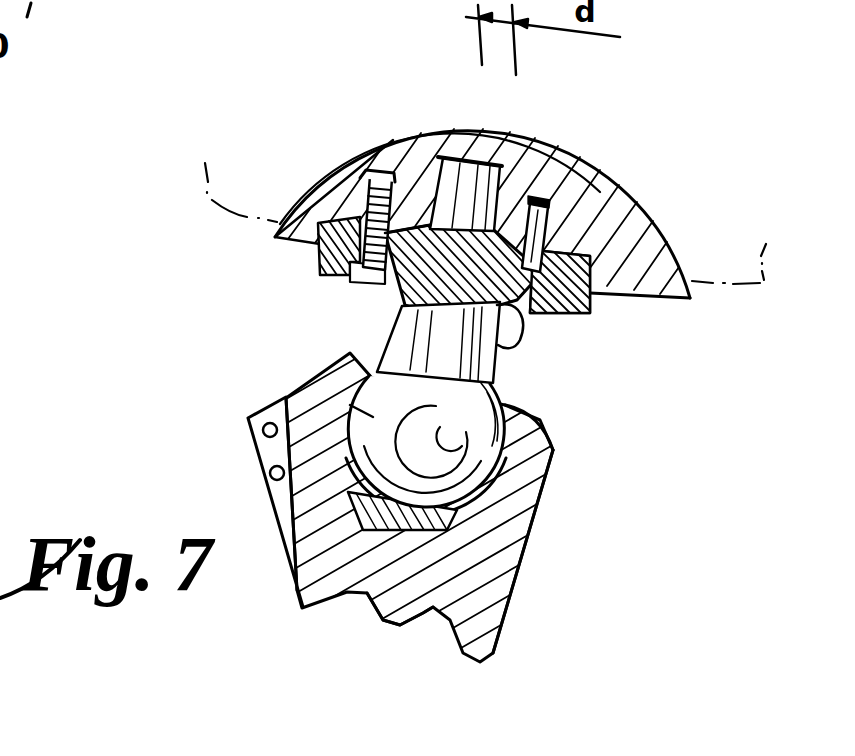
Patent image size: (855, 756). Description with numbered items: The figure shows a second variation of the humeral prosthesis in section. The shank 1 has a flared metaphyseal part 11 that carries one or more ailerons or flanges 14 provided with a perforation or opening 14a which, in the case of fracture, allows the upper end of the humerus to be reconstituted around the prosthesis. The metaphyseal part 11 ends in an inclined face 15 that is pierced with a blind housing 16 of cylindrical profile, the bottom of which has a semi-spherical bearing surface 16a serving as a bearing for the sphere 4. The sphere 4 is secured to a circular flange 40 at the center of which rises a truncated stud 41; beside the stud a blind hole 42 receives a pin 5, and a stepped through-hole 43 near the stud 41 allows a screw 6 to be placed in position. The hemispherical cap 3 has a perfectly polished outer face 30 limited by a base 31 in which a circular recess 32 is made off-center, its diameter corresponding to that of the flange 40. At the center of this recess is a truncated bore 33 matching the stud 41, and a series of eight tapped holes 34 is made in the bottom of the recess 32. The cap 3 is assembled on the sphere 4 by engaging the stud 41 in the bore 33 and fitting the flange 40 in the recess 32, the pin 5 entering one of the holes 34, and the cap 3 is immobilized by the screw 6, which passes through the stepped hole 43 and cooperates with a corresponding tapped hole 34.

The shank 1 is at (428, 530).
The hemispherical cap 3 is at (520, 225).
The sphere 4 is at (352, 406).
The pin 5 is at (600, 222).
The screw 6 is at (358, 190).
The metaphyseal part 11 is at (497, 575).
The aileron or flange 14 is at (250, 417).
The perforation or opening 14a is at (268, 473).
The inclined face 15 is at (540, 432).
The blind housing 16 is at (513, 433).
The semi-spherical bearing surface 16a is at (467, 613).
The outer face 30 is at (650, 214).
The base 31 is at (650, 303).
The circular recess 32 is at (675, 253).
The truncated bore 33 is at (435, 190).
The tapped holes 34 is at (364, 180).
The circular flange 40 is at (320, 263).
The truncated stud 41 is at (483, 165).
The blind hole 42 is at (517, 310).
The stepped through-hole 43 is at (322, 272).